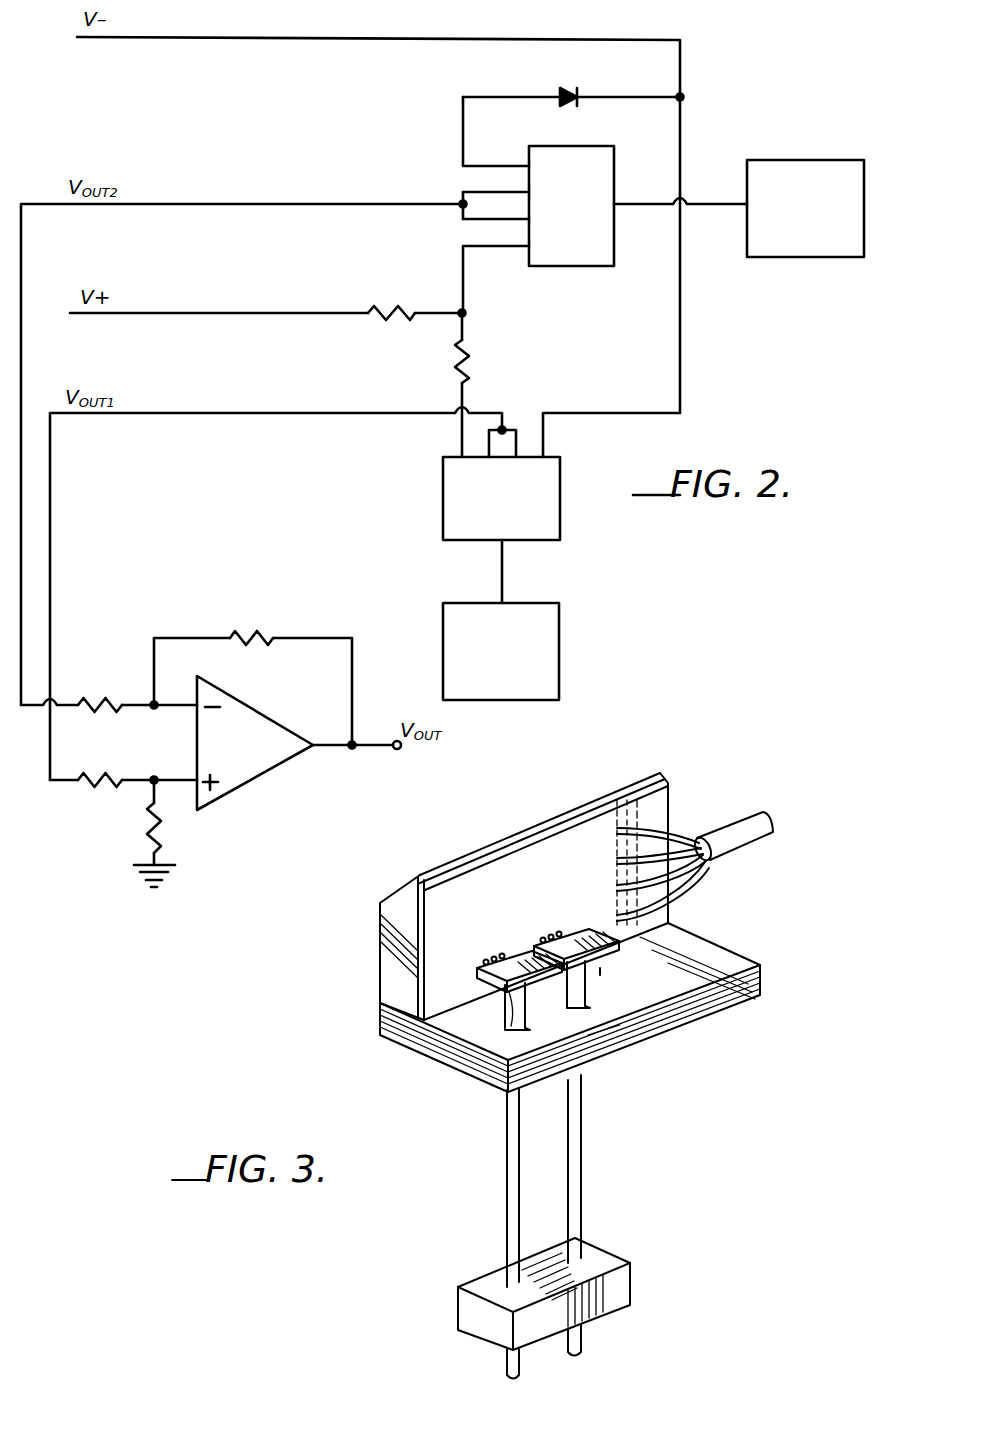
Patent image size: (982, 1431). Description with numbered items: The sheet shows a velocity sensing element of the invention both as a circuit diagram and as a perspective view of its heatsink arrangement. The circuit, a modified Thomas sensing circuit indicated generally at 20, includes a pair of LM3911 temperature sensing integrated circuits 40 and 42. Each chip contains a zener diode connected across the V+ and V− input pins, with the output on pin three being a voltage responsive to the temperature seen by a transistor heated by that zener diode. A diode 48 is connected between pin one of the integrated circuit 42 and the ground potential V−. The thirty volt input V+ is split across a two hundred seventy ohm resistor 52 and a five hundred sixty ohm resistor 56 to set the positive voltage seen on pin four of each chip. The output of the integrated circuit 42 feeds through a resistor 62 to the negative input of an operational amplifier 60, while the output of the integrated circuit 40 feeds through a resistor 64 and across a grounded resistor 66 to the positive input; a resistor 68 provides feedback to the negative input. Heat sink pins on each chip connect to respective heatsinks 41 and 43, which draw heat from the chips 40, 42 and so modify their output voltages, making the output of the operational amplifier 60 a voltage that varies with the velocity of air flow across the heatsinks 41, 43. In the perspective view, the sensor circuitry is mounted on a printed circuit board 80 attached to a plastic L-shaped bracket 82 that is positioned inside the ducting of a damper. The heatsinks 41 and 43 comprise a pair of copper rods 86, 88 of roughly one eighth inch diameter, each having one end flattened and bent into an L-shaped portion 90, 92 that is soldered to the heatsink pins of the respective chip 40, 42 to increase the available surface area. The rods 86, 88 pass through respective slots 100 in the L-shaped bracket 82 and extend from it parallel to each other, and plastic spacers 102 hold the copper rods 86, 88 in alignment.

In FIG. 2, the temperature control circuit 20 is at (655, 37).
In FIG. 2, the integrated circuit 40 is at (443, 490).
In FIG. 3, the integrated circuit 40 is at (580, 933).
In FIG. 2, the heatsink 41 is at (443, 620).
In FIG. 3, the heatsink 41 is at (590, 1187).
In FIG. 2, the integrated circuit 42 is at (614, 163).
In FIG. 3, the integrated circuit 42 is at (510, 963).
In FIG. 2, the heatsink 43 is at (796, 160).
In FIG. 3, the heatsink 43 is at (498, 1212).
In FIG. 2, the diode 48 is at (566, 88).
In FIG. 2, the resistor 52 is at (388, 309).
In FIG. 2, the resistor 56 is at (470, 357).
In FIG. 2, the operational amplifier 60 is at (268, 721).
In FIG. 2, the resistor 62 is at (108, 700).
In FIG. 2, the resistor 64 is at (98, 772).
In FIG. 2, the resistor 66 is at (148, 828).
In FIG. 2, the resistor 68 is at (250, 632).
In FIG. 3, the printed circuit board 80 is at (668, 803).
In FIG. 3, the L-shaped bracket 82 is at (725, 957).
In FIG. 3, the copper rod 86 is at (584, 1140).
In FIG. 3, the copper rod 88 is at (507, 1160).
In FIG. 3, the L-shaped portion 90 is at (600, 975).
In FIG. 3, the L-shaped portion 92 is at (537, 1006).
In FIG. 3, the slot 100 is at (598, 1022).
In FIG. 3, the plastic spacer 102 is at (613, 1265).